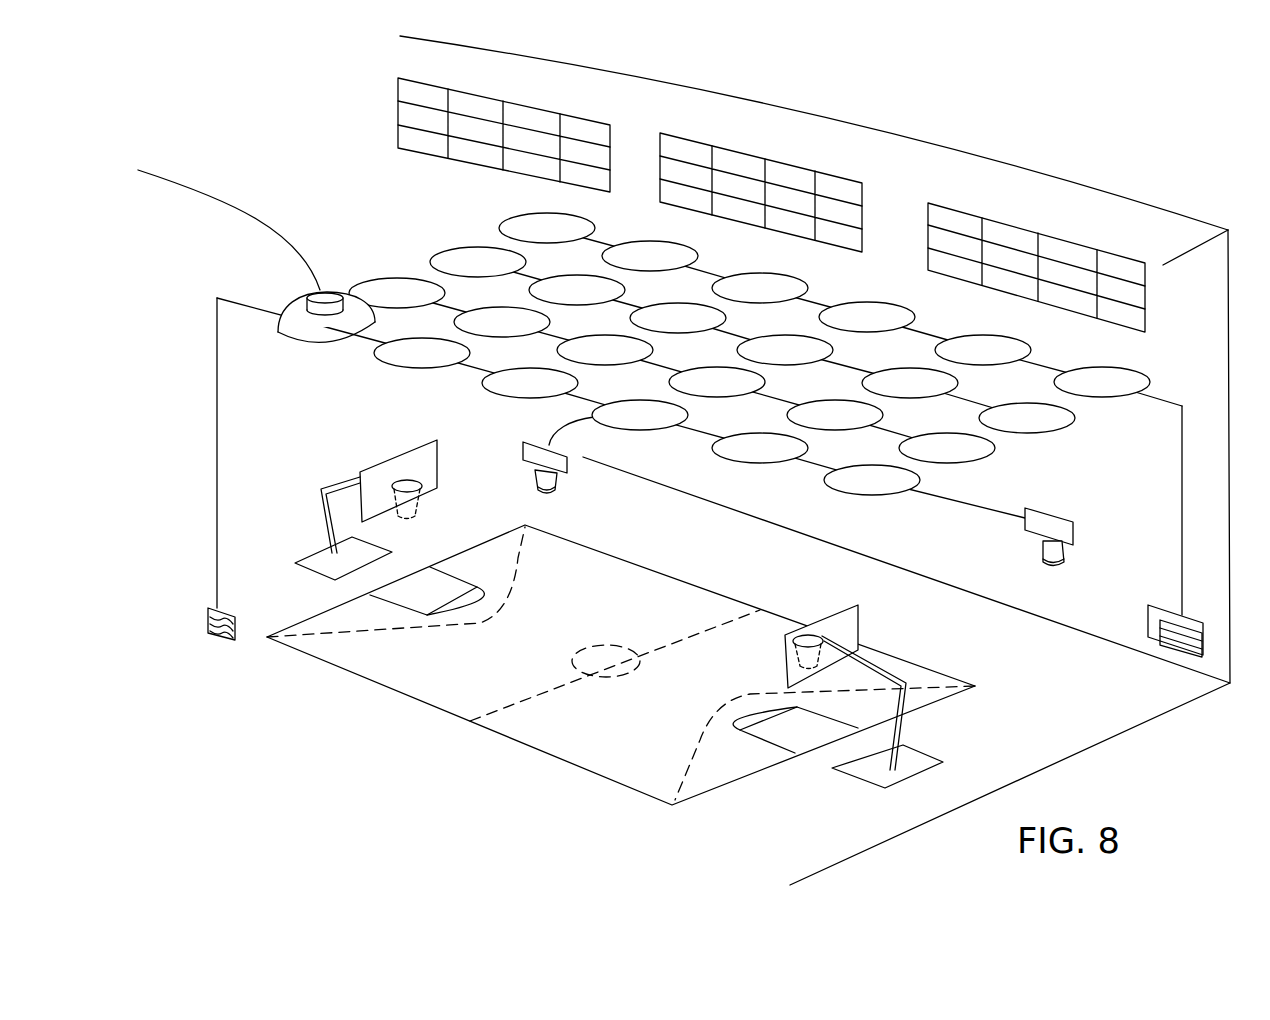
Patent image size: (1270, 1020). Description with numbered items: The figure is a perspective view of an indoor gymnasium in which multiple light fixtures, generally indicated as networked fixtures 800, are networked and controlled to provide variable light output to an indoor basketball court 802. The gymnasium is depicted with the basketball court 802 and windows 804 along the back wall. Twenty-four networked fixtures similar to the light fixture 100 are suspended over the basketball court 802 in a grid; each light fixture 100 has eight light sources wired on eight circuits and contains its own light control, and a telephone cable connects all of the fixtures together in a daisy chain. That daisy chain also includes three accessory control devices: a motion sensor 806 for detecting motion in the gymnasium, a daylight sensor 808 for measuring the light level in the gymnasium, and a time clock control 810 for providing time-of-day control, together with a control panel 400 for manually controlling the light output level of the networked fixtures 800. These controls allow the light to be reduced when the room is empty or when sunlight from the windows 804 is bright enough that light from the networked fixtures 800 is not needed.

The light fixture 100 is at (300, 287).
The control panel 400 is at (212, 634).
The networked light fixtures 800 is at (330, 197).
The basketball court 802 is at (474, 745).
The windows 804 is at (604, 111).
The motion sensor 806 is at (568, 468).
The daylight sensor 808 is at (1033, 533).
The time clock control 810 is at (1165, 606).